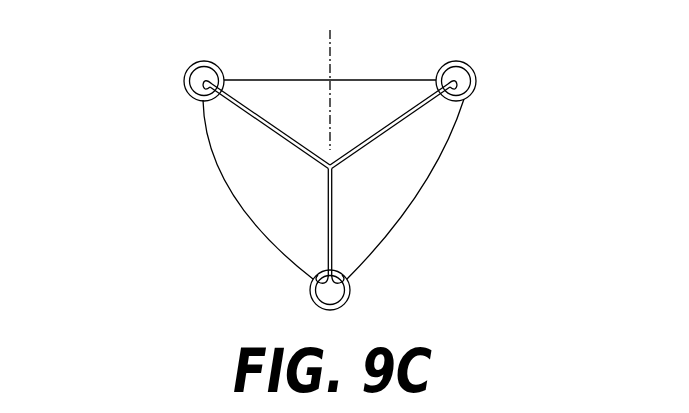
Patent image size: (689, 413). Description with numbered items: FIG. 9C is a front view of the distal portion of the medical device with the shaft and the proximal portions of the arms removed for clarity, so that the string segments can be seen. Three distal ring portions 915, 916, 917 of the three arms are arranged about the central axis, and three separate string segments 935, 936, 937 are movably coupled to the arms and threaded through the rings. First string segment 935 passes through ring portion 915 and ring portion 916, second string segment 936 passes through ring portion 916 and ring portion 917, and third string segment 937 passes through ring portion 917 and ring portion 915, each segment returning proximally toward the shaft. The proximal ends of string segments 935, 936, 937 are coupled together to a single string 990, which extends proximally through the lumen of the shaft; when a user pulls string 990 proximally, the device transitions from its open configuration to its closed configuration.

The ring portion 915 is at (350, 288).
The ring portion 916 is at (203, 63).
The ring portion 917 is at (475, 70).
The first string segment 935 is at (255, 226).
The second string segment 936 is at (362, 80).
The third string segment 937 is at (418, 192).
The string 990 is at (328, 70).